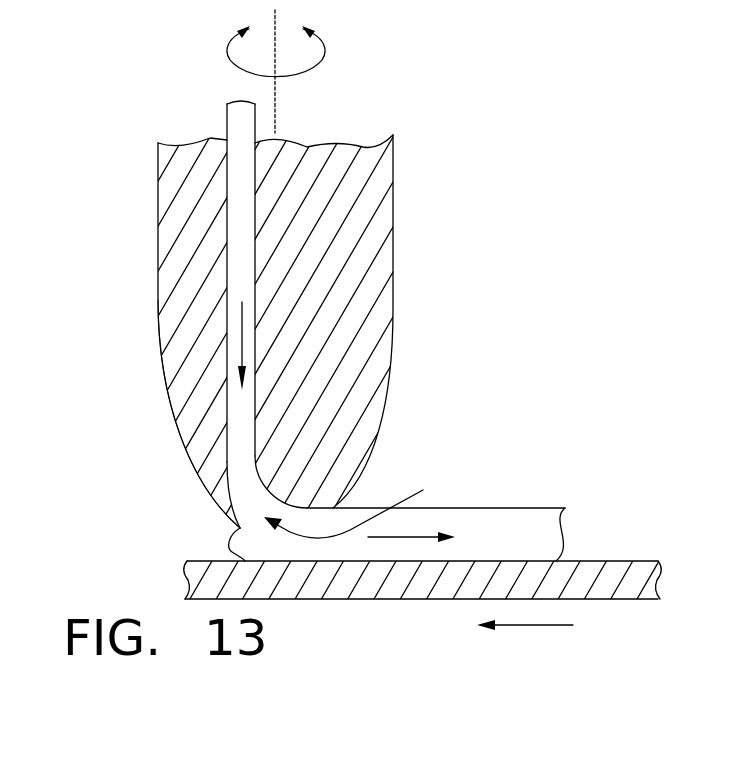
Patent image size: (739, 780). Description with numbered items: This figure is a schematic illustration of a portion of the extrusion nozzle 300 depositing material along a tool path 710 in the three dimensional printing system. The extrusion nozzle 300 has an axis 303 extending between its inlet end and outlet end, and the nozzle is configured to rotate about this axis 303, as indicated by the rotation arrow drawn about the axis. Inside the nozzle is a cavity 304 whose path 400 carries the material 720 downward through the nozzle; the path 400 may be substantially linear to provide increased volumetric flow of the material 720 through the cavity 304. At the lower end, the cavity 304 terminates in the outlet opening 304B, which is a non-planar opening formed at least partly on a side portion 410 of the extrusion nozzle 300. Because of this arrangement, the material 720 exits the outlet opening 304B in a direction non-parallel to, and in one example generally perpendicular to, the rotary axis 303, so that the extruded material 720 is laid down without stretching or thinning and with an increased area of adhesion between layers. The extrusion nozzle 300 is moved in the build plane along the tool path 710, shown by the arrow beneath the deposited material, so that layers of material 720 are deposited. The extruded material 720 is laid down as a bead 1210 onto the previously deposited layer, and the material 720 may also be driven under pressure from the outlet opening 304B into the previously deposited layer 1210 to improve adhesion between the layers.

The extrusion nozzle 300 is at (150, 452).
The axis 303 is at (273, 91).
The cavity 304 is at (257, 168).
The outlet opening 304B is at (360, 518).
The path 400 is at (242, 213).
The side portion 410 is at (345, 247).
The material 720 is at (515, 525).
The tool path 710 is at (535, 625).
The bead 1210 is at (438, 547).